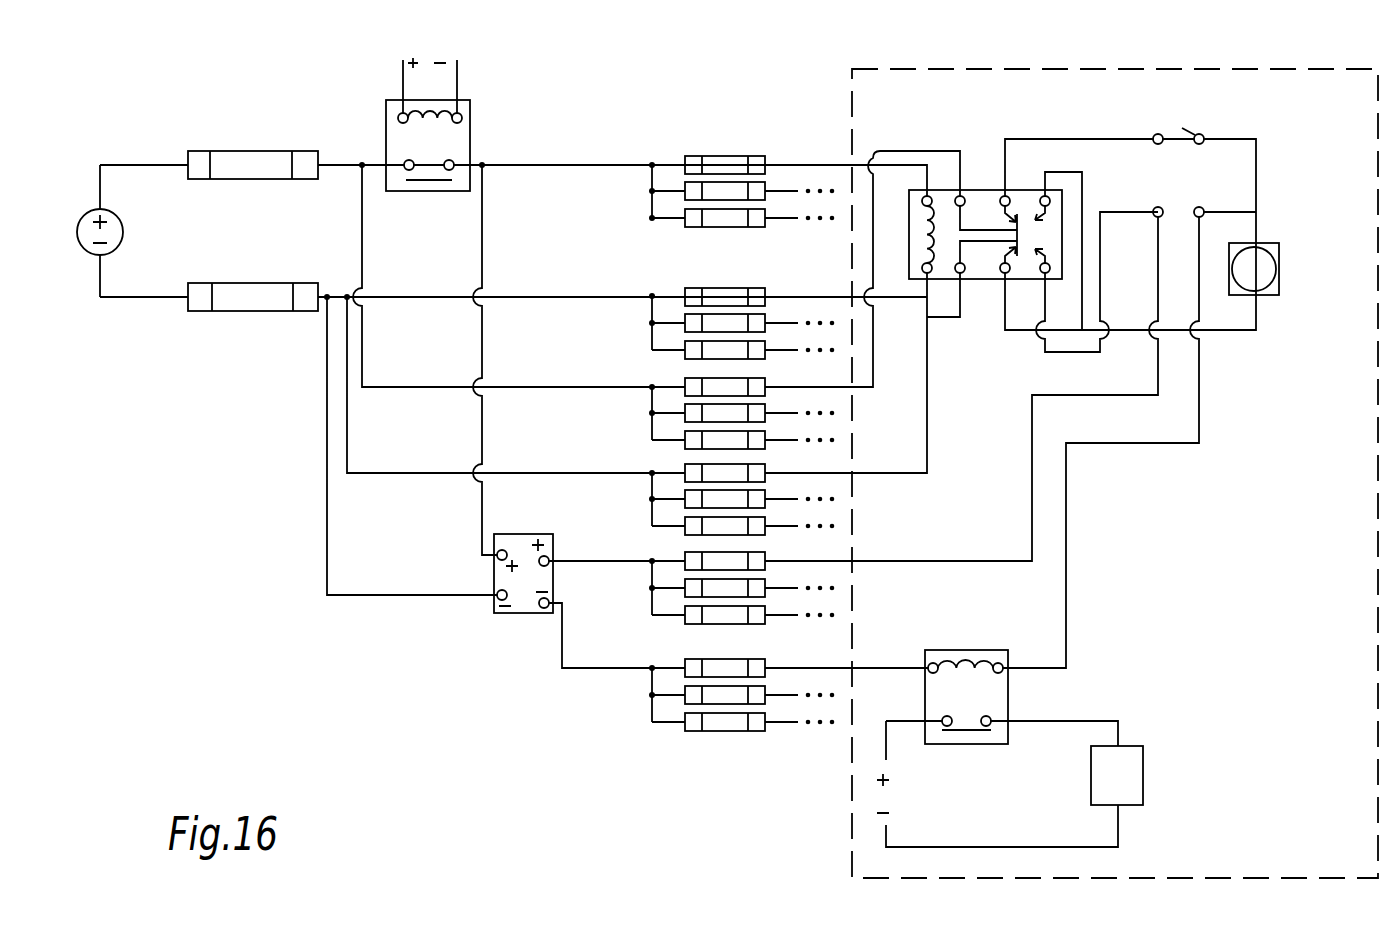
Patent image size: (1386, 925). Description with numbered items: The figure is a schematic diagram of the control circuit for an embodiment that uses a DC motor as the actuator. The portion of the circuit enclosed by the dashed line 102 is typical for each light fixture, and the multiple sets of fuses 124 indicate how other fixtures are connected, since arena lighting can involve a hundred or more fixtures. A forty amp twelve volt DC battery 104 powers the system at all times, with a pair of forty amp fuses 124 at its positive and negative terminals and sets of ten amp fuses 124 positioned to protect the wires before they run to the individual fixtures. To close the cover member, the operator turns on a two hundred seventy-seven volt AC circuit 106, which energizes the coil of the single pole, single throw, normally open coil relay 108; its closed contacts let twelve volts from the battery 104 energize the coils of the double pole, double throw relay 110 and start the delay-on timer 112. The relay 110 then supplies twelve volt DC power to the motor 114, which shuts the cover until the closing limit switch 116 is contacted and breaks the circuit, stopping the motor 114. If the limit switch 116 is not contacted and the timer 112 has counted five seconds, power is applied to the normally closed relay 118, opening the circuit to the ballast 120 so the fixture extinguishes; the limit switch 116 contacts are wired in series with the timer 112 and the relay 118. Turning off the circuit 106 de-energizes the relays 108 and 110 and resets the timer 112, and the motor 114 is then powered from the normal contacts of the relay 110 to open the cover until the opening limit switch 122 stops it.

The dashed line 102 is at (958, 69).
The 12 volt DC battery 104 is at (118, 222).
The 277 volt AC circuit 106 is at (457, 18).
The single pole, single throw, normally open coil relay 108 is at (462, 148).
The double pole, double throw relay 110 is at (950, 190).
The delay-on timer 112 is at (495, 613).
The 12 volt DC motor 114 is at (1233, 295).
The closing limit switch 116 is at (1183, 210).
The single pole, single throw, normally closed relay 118 is at (1010, 707).
The ballast 120 is at (1138, 746).
The opening limit switch 122 is at (1182, 128).
The fuses 124 is at (240, 151).